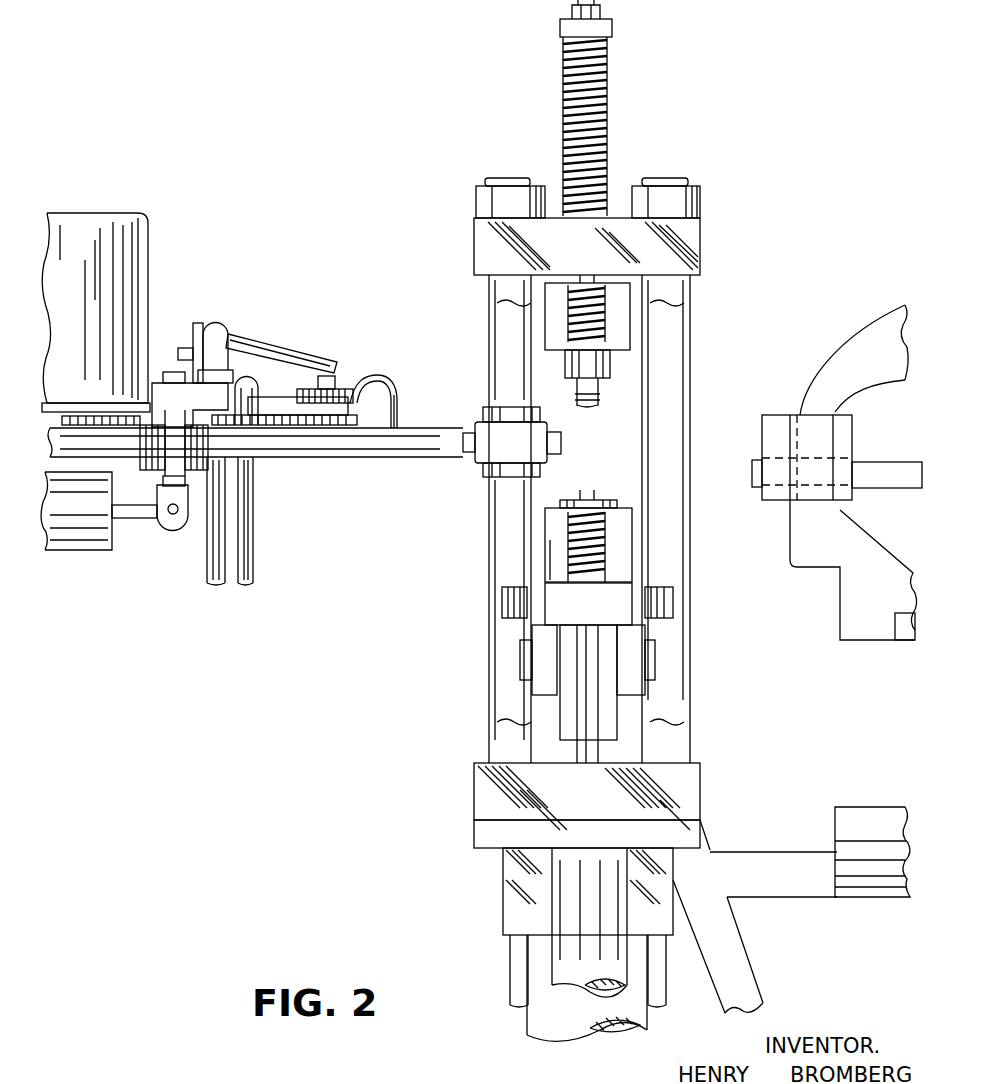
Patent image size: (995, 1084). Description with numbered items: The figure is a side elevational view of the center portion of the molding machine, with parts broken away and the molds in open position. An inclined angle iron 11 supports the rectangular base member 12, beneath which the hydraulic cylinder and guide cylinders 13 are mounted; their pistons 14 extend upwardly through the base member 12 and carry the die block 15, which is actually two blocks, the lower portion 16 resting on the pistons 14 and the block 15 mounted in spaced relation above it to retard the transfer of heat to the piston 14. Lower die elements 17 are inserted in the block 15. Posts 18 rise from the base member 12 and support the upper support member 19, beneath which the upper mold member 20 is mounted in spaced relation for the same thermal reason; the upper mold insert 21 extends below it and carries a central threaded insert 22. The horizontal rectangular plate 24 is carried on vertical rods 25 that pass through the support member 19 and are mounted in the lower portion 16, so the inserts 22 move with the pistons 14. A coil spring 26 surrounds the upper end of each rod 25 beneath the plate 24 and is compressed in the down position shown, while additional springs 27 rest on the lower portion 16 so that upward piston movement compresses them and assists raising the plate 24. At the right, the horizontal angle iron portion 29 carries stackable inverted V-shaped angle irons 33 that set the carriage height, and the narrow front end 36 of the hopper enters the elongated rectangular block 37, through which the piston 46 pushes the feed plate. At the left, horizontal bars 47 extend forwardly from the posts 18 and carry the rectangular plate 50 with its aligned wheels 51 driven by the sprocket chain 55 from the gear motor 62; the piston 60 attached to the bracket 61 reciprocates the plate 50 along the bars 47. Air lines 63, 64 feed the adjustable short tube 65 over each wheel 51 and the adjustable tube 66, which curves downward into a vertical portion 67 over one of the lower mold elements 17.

The angle iron 11 is at (745, 970).
The rectangular base member 12 is at (490, 813).
The hydraulic cylinder and guide cylinders 13 is at (585, 903).
The pistons 14 is at (588, 698).
The die block 15 is at (560, 526).
The lower portion of die block 16 is at (563, 603).
The lower die elements 17 is at (582, 498).
The posts 18 is at (665, 435).
The upper support member 19 is at (696, 236).
The upper mold member 20 is at (620, 330).
The upper mold insert 21 is at (603, 360).
The threaded insert 22 is at (596, 392).
The horizontal rectangular plate 24 is at (606, 30).
The vertical rods 25 is at (592, 165).
The coil spring 26 is at (606, 140).
The additional springs 27 is at (553, 560).
The horizontal angle iron portion 29 is at (768, 887).
The inverted V-shaped angle irons 33 is at (862, 868).
The narrow front end of hopper 36 is at (820, 390).
The elongated rectangular block 37 is at (773, 507).
The piston 46 is at (883, 475).
The horizontal bars 47 is at (415, 440).
The rectangular plate 50 is at (268, 430).
The wheels 51 is at (345, 385).
The sprocket chain 55 is at (302, 430).
The piston 60 is at (80, 530).
The bracket 61 is at (160, 520).
The gear motor 62 is at (148, 245).
The air line 63 is at (205, 580).
The air line 64 is at (253, 580).
The adjustable short tube 65 is at (245, 340).
The adjustable tube 66 is at (380, 376).
The vertical portion 67 is at (397, 410).